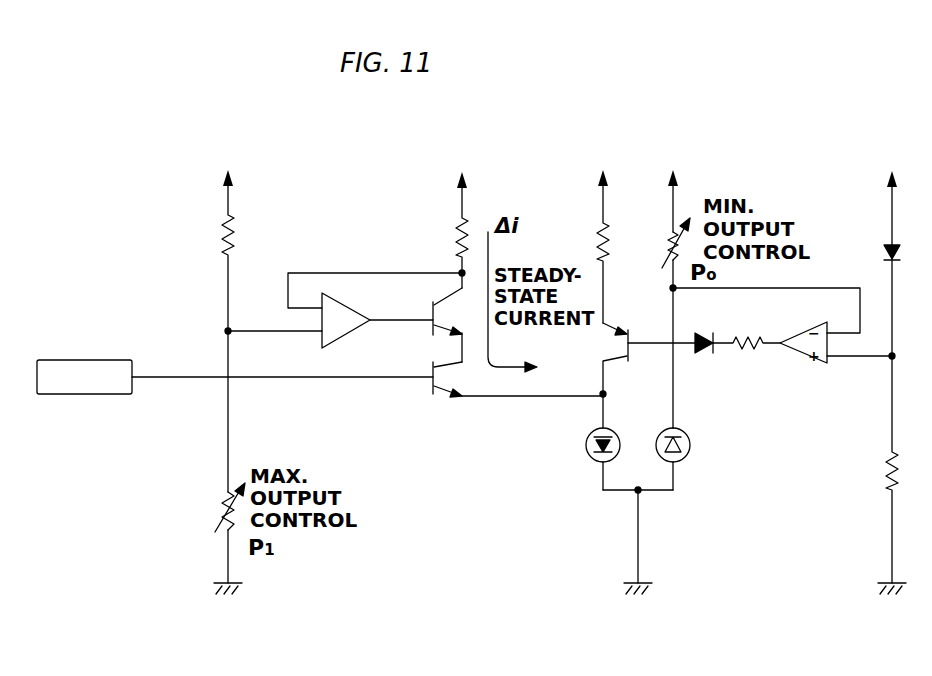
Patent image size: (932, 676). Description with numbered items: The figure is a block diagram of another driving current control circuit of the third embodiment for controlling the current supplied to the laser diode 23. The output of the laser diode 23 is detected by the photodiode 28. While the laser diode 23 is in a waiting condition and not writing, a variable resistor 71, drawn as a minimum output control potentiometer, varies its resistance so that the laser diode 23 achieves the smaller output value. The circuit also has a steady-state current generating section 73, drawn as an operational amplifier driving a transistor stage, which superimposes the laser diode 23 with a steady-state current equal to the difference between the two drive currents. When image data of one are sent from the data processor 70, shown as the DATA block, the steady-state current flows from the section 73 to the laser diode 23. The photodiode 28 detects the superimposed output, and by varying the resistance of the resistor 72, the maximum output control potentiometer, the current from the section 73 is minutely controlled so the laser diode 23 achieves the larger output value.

The data processor 70 is at (106, 360).
The variable resistor 71 is at (668, 235).
The resistor 72 is at (228, 504).
The steady-state current generating section 73 is at (391, 256).
The laser diode 23 is at (586, 438).
The photodiode 28 is at (690, 437).